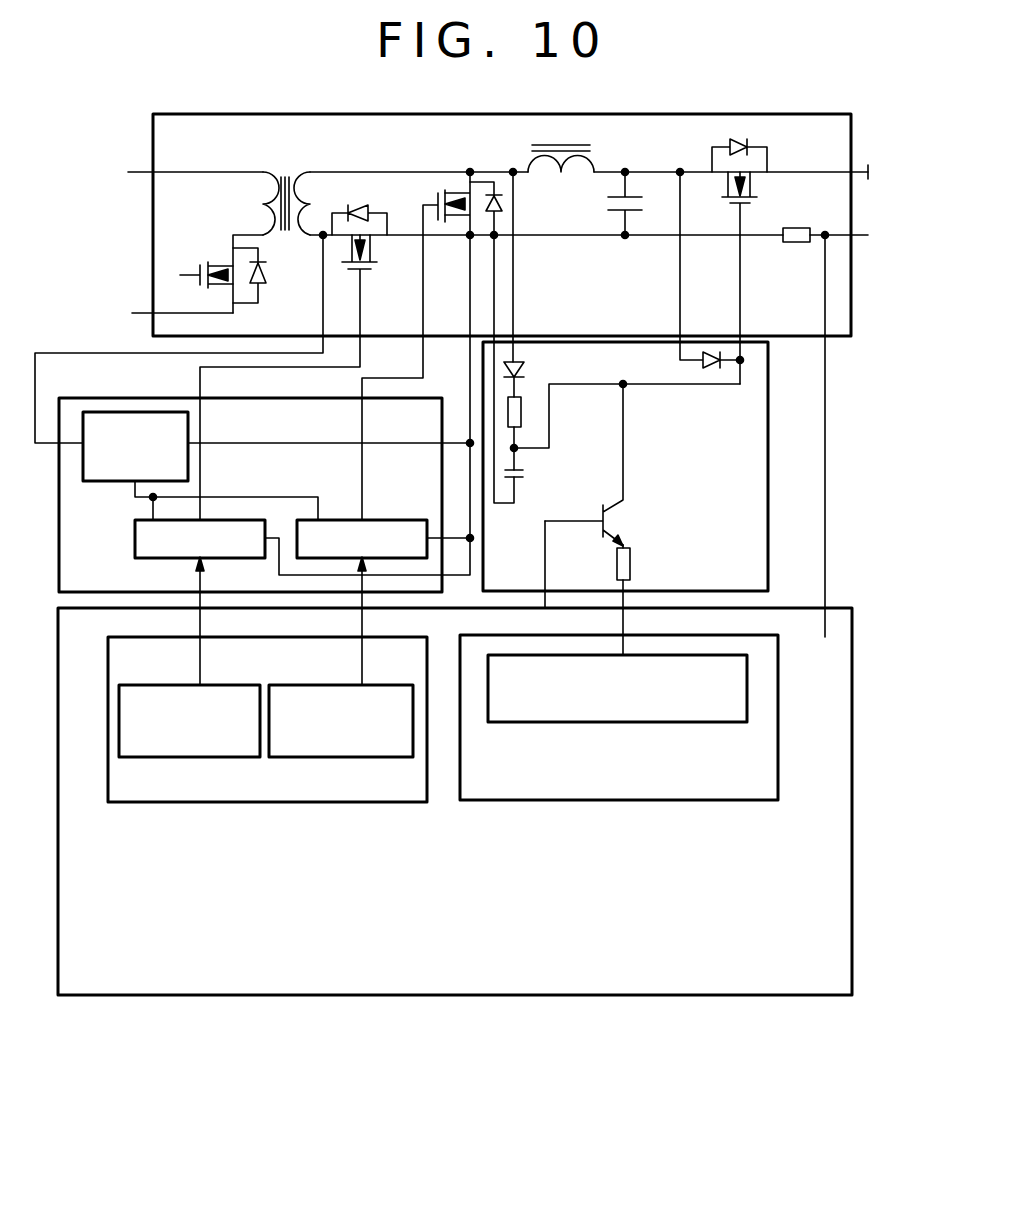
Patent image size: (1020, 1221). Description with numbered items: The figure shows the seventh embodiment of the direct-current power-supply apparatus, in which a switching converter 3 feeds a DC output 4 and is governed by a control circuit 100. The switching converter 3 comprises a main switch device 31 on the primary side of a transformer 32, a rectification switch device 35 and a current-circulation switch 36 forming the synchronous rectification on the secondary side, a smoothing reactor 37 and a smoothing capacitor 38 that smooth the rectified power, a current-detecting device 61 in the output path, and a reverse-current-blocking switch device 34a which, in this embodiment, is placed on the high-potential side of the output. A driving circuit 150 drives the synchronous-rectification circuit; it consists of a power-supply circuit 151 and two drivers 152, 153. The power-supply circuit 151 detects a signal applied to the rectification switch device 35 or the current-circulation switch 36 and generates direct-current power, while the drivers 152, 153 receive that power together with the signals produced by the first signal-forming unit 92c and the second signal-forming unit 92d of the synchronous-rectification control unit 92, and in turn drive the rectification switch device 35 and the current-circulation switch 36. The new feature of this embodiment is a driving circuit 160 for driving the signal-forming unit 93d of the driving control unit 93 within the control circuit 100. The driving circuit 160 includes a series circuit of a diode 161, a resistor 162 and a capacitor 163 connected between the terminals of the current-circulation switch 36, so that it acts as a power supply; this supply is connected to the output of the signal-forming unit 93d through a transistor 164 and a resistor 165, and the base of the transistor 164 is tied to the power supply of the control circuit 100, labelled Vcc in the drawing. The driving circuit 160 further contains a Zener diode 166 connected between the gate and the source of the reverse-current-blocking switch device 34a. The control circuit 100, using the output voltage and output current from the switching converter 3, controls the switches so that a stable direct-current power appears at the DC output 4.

The switching converter 3 is at (153, 147).
The main switch device 31 is at (201, 258).
The transformer 32 is at (286, 176).
The reverse-current-blocking switch device 34a is at (750, 160).
The rectification switch device 35 is at (345, 212).
The current-circulation switch 36 is at (441, 183).
The smoothing reactor 37 is at (573, 147).
The smoothing capacitor 38 is at (642, 192).
The DC output 4 is at (855, 172).
The current-detecting device 61 is at (795, 226).
The driving circuit 150 is at (100, 382).
The power-supply circuit 151 is at (122, 412).
The driver 152 is at (227, 520).
The driver 153 is at (384, 520).
The driving circuit 160 is at (770, 414).
The diode 161 is at (526, 368).
The resistor 162 is at (522, 412).
The capacitor 163 is at (528, 473).
The transistor 164 is at (627, 513).
The resistor 165 is at (634, 561).
The Zener diode 166 is at (716, 372).
The synchronous-rectification control unit 92 is at (108, 668).
The first signal-forming unit 92c is at (196, 758).
The second signal-forming unit 92d is at (362, 758).
The driving control unit 93 is at (741, 801).
The signal-forming unit 93d is at (510, 723).
The control circuit 100 is at (855, 641).